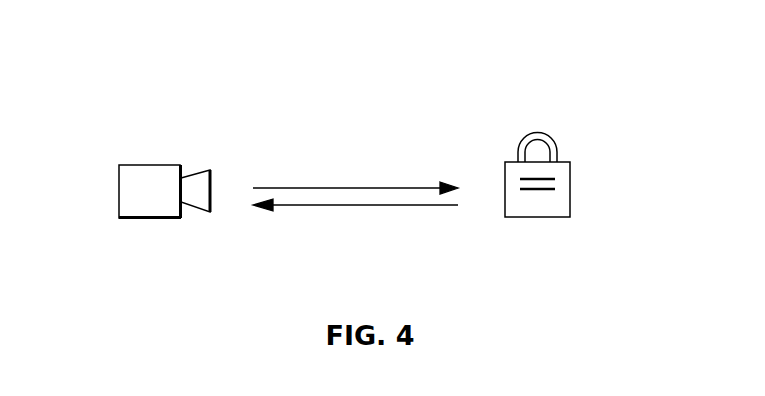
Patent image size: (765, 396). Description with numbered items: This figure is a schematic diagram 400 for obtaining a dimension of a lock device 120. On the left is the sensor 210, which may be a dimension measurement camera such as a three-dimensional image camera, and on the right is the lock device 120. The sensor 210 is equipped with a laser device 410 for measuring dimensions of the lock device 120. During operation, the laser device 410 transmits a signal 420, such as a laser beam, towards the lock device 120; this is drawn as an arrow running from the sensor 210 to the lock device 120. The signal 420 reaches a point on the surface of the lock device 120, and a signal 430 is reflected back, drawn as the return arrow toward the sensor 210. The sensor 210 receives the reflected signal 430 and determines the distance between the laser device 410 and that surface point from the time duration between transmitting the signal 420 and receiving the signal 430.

The schematic diagram 400 is at (192, 69).
The sensor 210 is at (148, 165).
The laser device 410 is at (213, 182).
The signal 420 is at (352, 190).
The reflected signal 430 is at (352, 203).
The lock device 120 is at (563, 161).